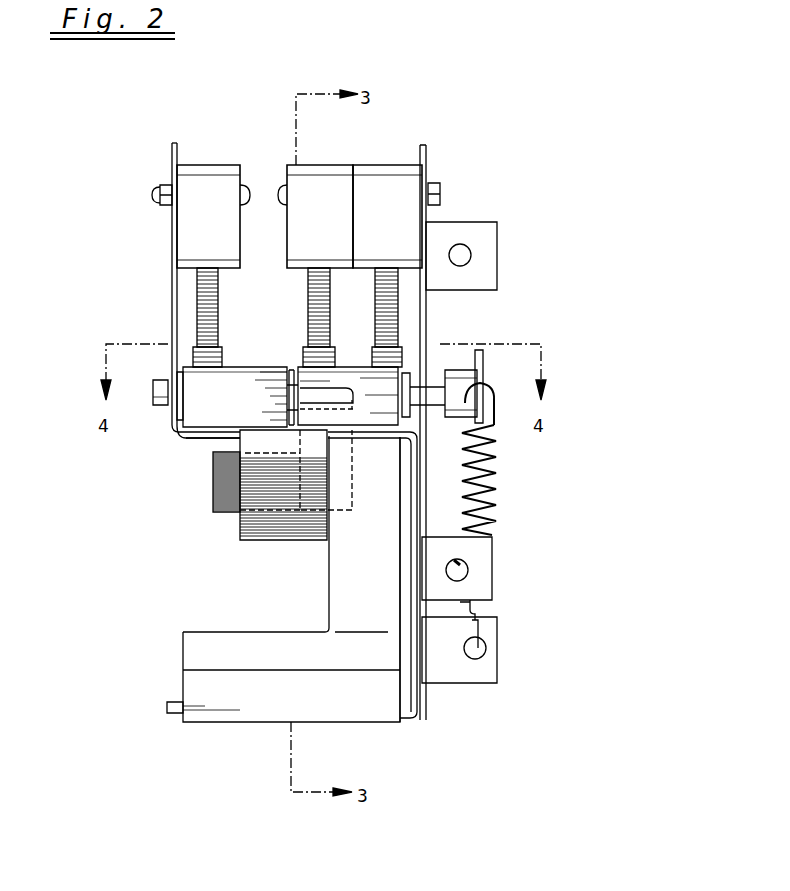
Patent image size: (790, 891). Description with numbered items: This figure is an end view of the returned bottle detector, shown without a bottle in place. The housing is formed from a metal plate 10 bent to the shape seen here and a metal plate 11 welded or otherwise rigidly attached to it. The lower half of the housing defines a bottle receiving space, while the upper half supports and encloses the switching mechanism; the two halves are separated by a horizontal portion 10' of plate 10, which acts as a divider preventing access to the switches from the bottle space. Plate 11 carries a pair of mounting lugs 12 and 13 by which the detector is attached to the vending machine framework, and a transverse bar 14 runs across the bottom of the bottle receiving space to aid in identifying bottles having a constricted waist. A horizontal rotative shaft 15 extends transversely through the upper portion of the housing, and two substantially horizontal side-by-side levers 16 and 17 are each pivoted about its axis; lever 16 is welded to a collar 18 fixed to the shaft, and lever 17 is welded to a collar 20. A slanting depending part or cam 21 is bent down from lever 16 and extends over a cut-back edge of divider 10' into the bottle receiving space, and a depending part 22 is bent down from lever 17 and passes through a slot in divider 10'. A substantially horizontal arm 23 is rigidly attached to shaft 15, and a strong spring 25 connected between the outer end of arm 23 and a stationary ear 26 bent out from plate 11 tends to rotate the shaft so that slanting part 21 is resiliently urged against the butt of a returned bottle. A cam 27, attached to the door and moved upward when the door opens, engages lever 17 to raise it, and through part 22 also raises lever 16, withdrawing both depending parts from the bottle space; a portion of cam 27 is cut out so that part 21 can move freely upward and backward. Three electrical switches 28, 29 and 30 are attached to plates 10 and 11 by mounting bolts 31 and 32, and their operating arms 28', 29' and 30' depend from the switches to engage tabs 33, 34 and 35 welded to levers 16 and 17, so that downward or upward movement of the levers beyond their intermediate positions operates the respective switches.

The metal plate 10 is at (275, 449).
The horizontal portion of plate 10' is at (202, 452).
The metal plate 11 is at (428, 310).
The mounting lug 12 is at (482, 230).
The mounting lug 13 is at (446, 537).
The transverse bar 14 is at (174, 702).
The rotative shaft 15 is at (160, 380).
The lever 16 is at (250, 382).
The lever 17 is at (356, 377).
The collar 18 is at (291, 372).
The collar 20 is at (405, 376).
The slanting depending part 21 is at (282, 540).
The depending part 22 is at (213, 482).
The arm 23 is at (483, 364).
The spring 25 is at (493, 520).
The stationary ear 26 is at (485, 683).
The cam 27 is at (282, 632).
The electrical switch 28 is at (213, 205).
The electrical switch 29 is at (315, 205).
The electrical switch 30 is at (387, 205).
The switch operating arm 28' is at (229, 307).
The switch operating arm 29' is at (302, 307).
The switch operating arm 30' is at (370, 307).
The mounting bolt 31 is at (160, 194).
The mounting bolt 32 is at (440, 194).
The tab 33 is at (222, 352).
The tab 34 is at (304, 356).
The tab 35 is at (373, 360).